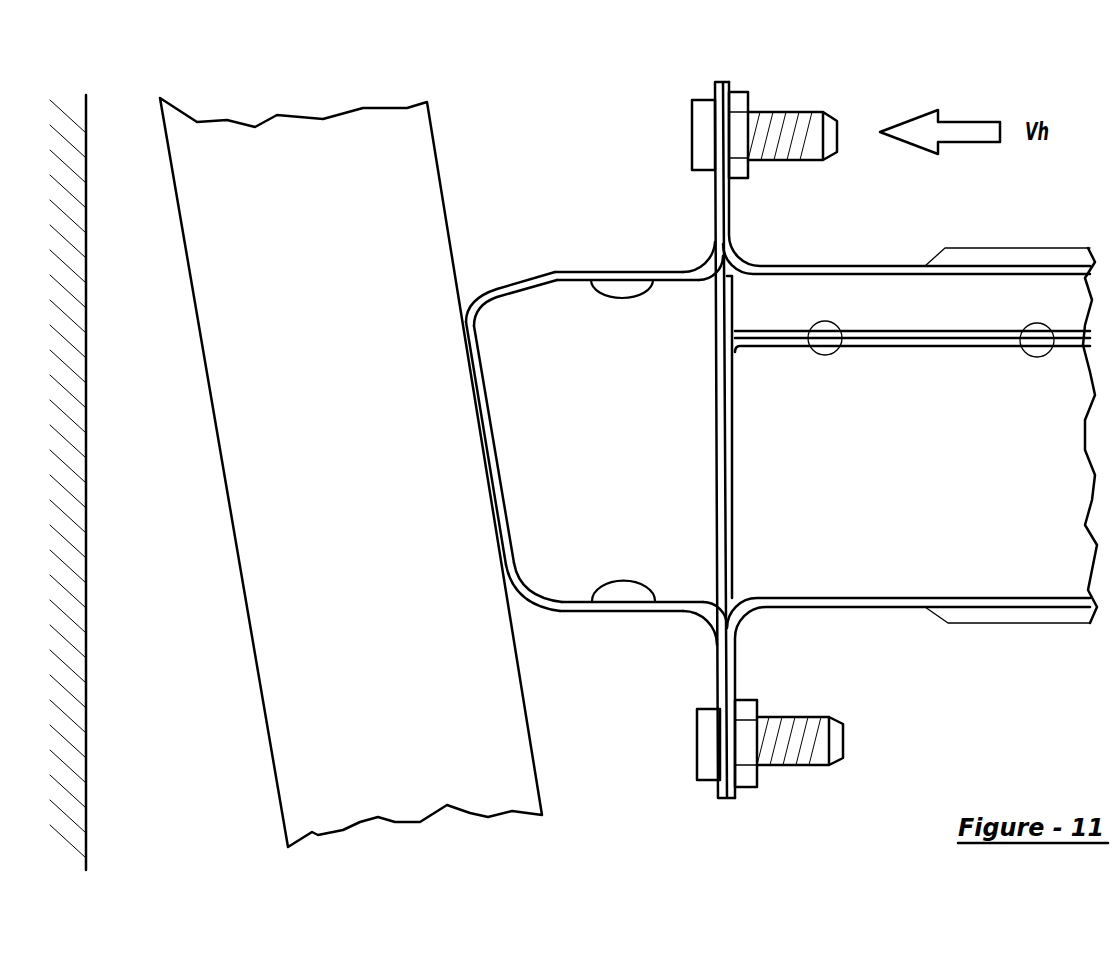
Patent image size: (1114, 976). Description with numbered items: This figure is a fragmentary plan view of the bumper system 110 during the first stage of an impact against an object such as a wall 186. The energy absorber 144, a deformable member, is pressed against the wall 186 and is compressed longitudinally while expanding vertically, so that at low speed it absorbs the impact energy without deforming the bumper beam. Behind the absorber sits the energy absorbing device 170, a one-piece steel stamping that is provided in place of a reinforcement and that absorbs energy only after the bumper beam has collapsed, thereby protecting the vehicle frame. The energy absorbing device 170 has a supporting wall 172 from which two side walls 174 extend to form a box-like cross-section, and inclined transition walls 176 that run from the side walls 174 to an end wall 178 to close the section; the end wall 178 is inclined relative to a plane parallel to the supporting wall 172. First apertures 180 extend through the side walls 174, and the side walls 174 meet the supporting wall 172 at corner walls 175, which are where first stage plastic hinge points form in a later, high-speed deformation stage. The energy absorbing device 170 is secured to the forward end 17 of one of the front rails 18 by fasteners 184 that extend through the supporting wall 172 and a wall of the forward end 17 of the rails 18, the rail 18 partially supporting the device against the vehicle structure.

The wall 186 is at (86, 183).
The energy absorber 144 is at (413, 173).
The bumper system 110 is at (522, 86).
The energy absorbing device 170 is at (596, 432).
The side walls 174 is at (607, 268).
The transition walls 176 is at (503, 268).
The end wall 178 is at (497, 440).
The first apertures 180 is at (622, 296).
The supporting wall 172 is at (714, 84).
The corner walls 175 is at (697, 276).
The forward end 17 is at (782, 453).
The fasteners 184 is at (792, 126).
The front rails 18 is at (890, 268).